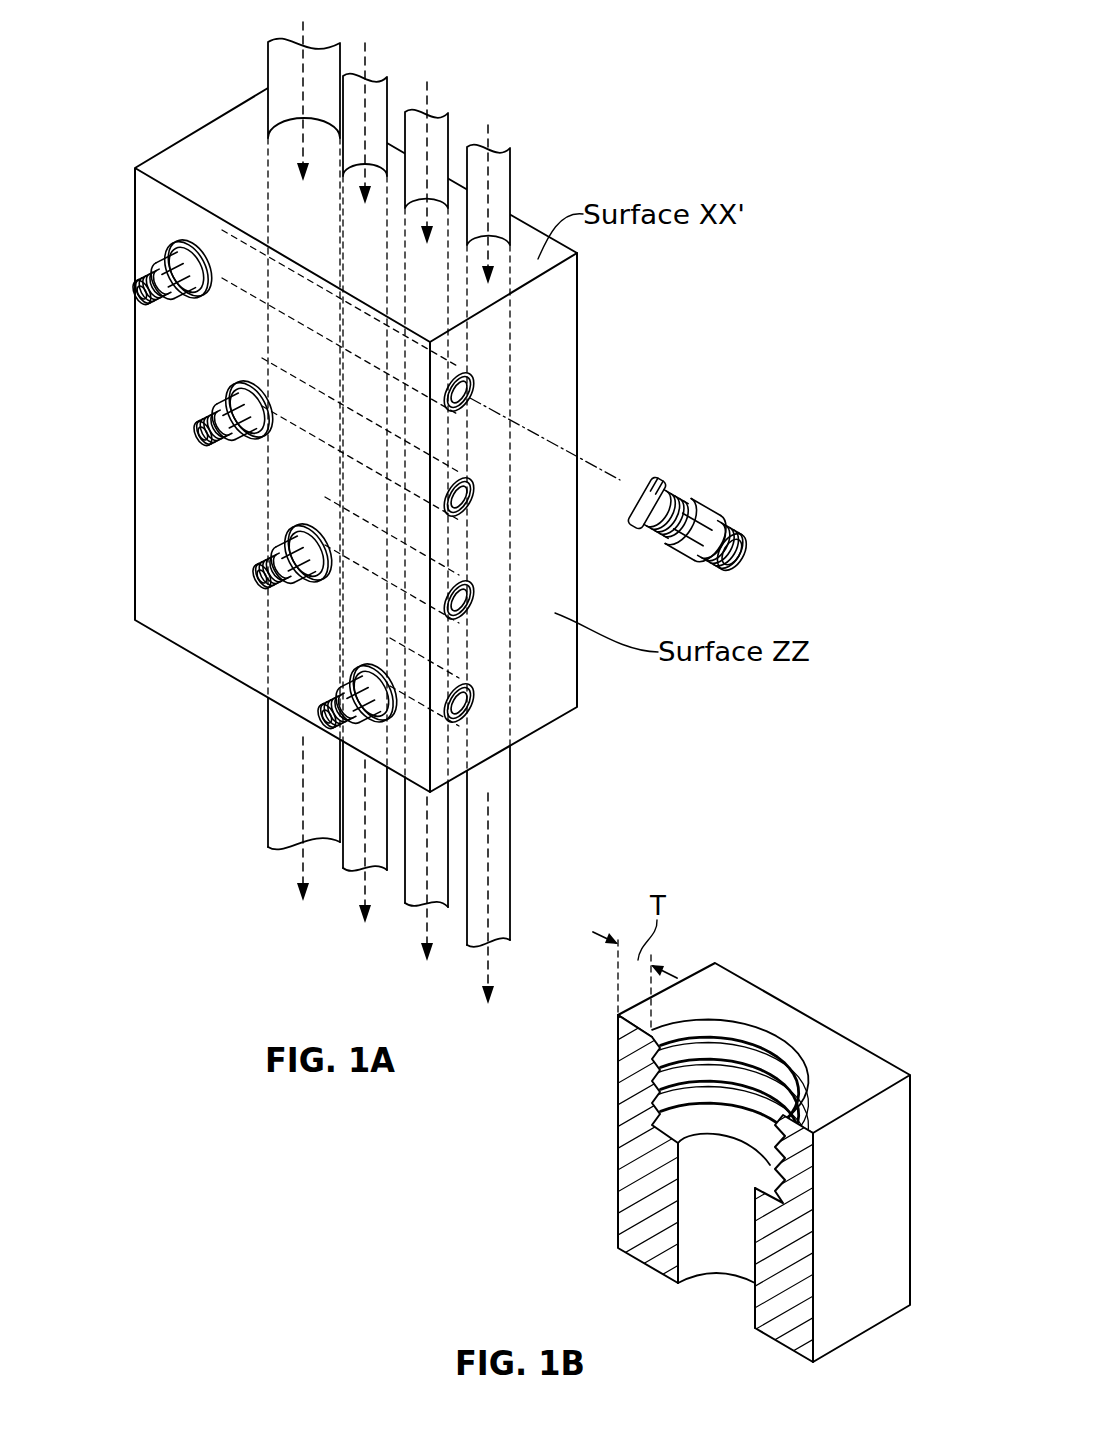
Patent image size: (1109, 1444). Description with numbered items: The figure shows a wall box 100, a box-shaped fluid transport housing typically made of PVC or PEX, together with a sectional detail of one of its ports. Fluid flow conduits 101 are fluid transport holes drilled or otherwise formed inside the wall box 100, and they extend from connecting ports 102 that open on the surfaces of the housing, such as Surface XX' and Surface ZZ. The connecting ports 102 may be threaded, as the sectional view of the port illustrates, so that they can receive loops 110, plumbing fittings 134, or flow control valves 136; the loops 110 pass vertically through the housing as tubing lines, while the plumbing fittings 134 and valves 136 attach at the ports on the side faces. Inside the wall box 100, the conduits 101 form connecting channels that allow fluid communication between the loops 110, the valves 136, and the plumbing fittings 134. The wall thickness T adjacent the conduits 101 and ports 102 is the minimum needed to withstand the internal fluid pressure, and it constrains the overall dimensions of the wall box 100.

In FIG. 1A, the wall box 100 is at (157, 73).
In FIG. 1B, the fluid flow conduit 101 is at (722, 1257).
In FIG. 1A, the connecting port 102 is at (459, 498).
In FIG. 1B, the connecting port 102 is at (713, 1050).
In FIG. 1A, the loop 110 is at (376, 502).
In FIG. 1A, the plumbing fitting 134 is at (653, 472).
In FIG. 1A, the flow control valve 136 is at (224, 498).